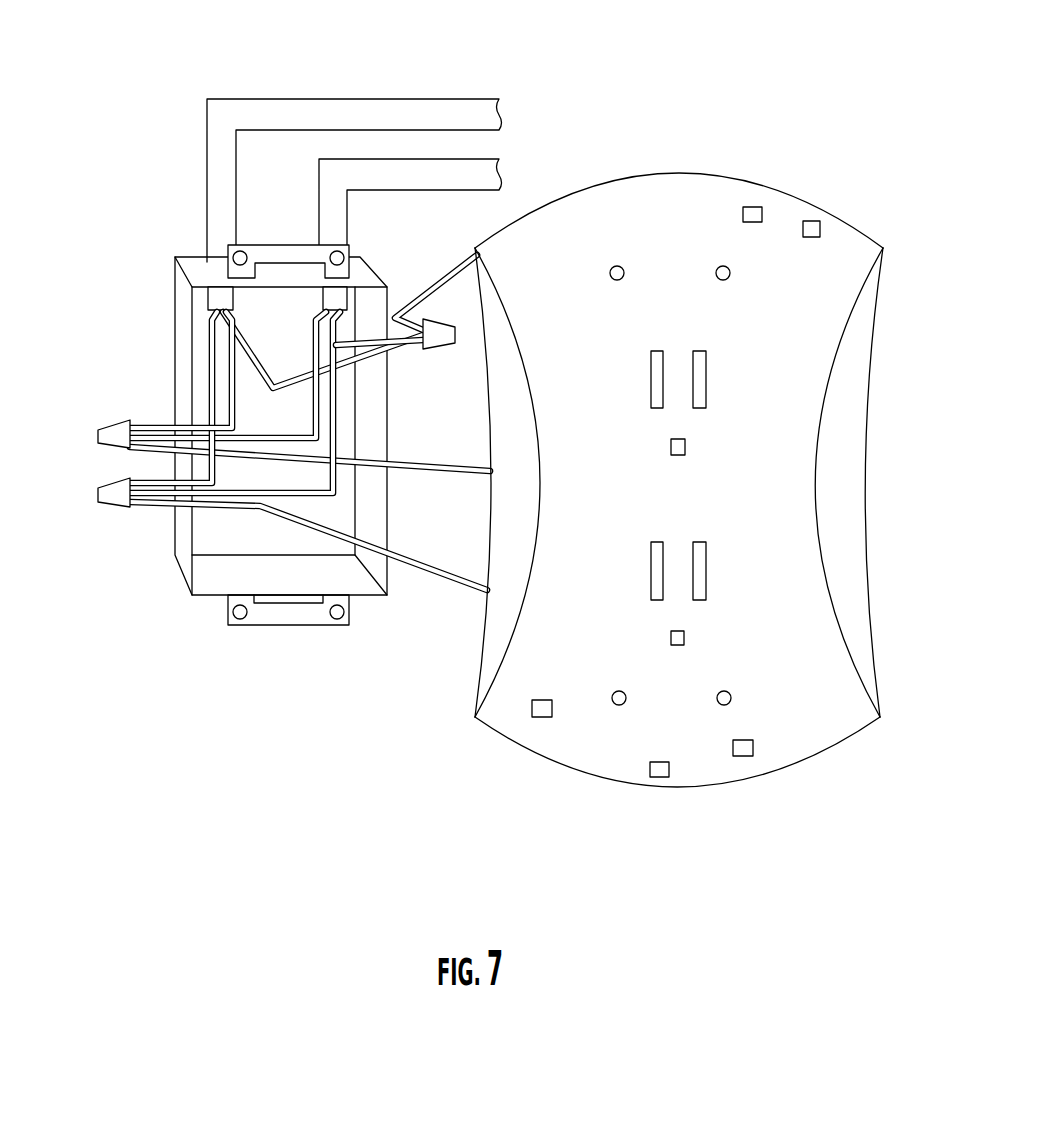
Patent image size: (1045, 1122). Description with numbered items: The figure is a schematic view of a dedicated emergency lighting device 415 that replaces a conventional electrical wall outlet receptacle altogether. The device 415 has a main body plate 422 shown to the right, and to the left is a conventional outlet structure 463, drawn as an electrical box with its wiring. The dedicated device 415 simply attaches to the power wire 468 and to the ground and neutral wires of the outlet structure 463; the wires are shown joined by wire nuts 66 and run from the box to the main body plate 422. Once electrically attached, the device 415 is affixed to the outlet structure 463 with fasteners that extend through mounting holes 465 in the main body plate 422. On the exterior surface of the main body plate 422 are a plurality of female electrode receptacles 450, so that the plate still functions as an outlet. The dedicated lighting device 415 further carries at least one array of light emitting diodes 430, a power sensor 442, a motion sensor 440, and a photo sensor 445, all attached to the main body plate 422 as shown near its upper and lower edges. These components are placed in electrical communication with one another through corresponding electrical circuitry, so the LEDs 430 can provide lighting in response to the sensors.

The wire nuts 66 is at (92, 443).
The dedicated lighting device 415 is at (410, 772).
The main body plate 422 is at (562, 753).
The array of light emitting diodes (LEDs) 430 is at (757, 206).
The motion sensor 440 is at (750, 757).
The power sensor 442 is at (532, 707).
The photo sensor 445 is at (820, 222).
The female electrode receptacles 450 is at (707, 375).
The conventional outlet structure 463 is at (166, 250).
The mounting holes 465 is at (618, 262).
The power wire 468 is at (440, 277).